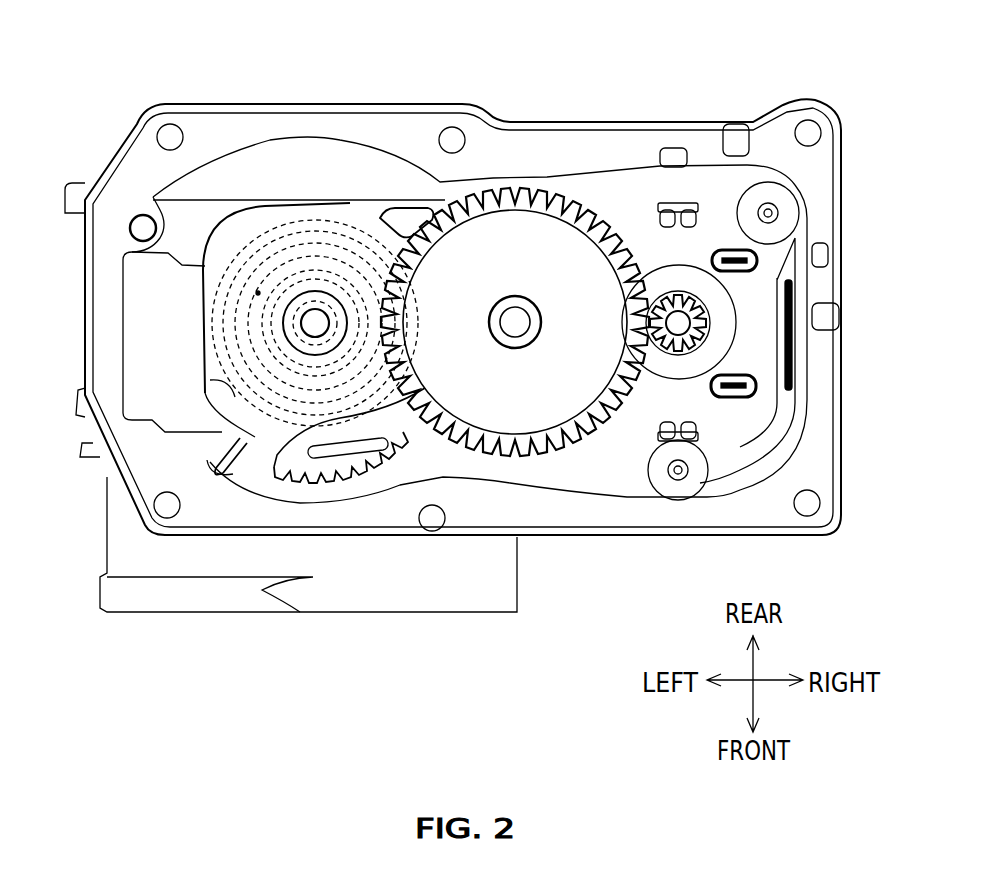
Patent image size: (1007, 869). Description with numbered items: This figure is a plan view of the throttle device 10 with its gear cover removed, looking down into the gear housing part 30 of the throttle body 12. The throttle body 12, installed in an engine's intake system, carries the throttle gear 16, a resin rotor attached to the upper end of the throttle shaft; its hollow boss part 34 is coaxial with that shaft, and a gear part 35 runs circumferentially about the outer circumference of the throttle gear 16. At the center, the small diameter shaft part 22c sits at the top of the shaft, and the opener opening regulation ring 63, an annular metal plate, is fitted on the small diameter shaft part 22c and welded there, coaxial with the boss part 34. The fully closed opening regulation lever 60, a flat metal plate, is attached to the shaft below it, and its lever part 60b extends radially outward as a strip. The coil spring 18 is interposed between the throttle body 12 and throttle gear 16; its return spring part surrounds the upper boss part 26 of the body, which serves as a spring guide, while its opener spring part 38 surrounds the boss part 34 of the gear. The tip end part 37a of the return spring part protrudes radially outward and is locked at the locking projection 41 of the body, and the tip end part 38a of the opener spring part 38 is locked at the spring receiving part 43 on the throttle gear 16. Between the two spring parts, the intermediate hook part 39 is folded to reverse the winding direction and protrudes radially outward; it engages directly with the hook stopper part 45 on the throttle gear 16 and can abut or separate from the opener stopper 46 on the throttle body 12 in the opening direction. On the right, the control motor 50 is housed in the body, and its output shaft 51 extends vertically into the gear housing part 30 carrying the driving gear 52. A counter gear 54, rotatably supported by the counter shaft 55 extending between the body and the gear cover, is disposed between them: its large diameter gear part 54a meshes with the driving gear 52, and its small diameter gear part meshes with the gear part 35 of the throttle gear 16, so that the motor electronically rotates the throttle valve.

The throttle device 10 is at (703, 106).
The throttle body 12 is at (92, 551).
The throttle gear 16 is at (189, 343).
The coil spring 18 is at (408, 450).
The small diameter shaft part 22c is at (316, 322).
The upper boss part 26 is at (255, 294).
The gear housing part 30 is at (818, 177).
The boss part 34 is at (245, 352).
The gear part 35 is at (425, 450).
The tip end part 37a is at (417, 203).
The opener spring part 38 is at (330, 380).
The tip end part 38a is at (277, 462).
The intermediate hook part 39 is at (218, 460).
The locking projection 41 is at (390, 208).
The spring receiving part 43 is at (297, 480).
The hook stopper part 45 is at (200, 417).
The opener stopper 46 is at (220, 442).
The control motor 50 is at (746, 361).
The output shaft 51 is at (680, 323).
The driving gear 52 is at (680, 305).
The counter gear 54 is at (562, 250).
The large diameter gear part 54a is at (625, 248).
The counter shaft 55 is at (515, 322).
The fully closed opening regulation lever 60 is at (258, 292).
The lever part 60b is at (338, 360).
The opener opening regulation ring 63 is at (348, 331).